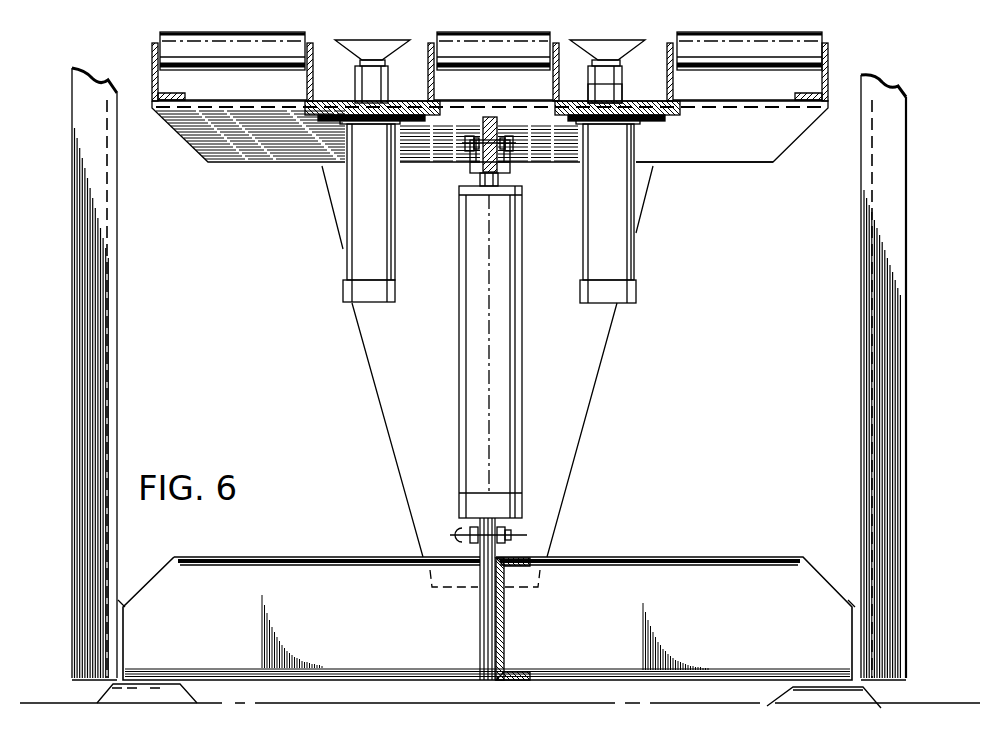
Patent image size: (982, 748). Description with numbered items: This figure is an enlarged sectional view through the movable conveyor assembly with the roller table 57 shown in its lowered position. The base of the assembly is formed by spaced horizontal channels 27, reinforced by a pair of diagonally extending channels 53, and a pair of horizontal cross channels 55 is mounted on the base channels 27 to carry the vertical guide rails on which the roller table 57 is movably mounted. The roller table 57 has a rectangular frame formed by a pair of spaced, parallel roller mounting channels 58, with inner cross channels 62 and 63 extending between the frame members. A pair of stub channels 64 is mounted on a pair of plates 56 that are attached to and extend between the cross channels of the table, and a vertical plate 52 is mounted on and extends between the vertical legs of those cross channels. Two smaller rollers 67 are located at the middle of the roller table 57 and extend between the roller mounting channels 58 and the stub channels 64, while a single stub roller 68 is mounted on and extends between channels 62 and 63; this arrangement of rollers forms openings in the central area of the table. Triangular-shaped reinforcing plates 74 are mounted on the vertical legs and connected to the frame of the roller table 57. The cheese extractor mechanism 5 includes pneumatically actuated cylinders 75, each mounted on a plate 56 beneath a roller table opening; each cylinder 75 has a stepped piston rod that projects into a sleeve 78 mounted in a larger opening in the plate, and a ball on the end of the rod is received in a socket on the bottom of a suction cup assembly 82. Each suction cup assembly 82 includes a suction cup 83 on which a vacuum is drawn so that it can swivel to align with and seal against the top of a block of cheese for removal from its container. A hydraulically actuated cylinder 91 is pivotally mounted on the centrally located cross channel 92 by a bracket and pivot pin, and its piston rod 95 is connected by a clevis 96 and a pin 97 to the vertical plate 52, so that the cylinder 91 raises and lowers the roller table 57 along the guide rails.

The cheese extractor mechanism 5 is at (318, 258).
The horizontal channels 27 is at (793, 689).
The vertical plate 52 is at (483, 128).
The diagonally extending channels 53 is at (78, 372).
The horizontal cross channels 55 is at (637, 573).
The plates 56 is at (313, 118).
The roller table 57 is at (786, 170).
The roller mounting channels 58 is at (152, 58).
The cross channel 62 is at (430, 50).
The cross channel 63 is at (556, 46).
The stub channels 64 is at (316, 50).
The smaller rollers 67 is at (300, 36).
The stub roller 68 is at (487, 42).
The triangular-shaped reinforcing plates 74 is at (570, 443).
The pneumatically actuated cylinders 75 is at (622, 288).
The sleeve 78 is at (628, 90).
The suction cup assembly 82 is at (655, 142).
The suction cup 83 is at (370, 42).
The hydraulically actuated cylinder 91 is at (472, 360).
The cross channel 92 is at (504, 632).
The piston rod 95 is at (480, 181).
The clevis 96 is at (470, 164).
The pin 97 is at (512, 152).